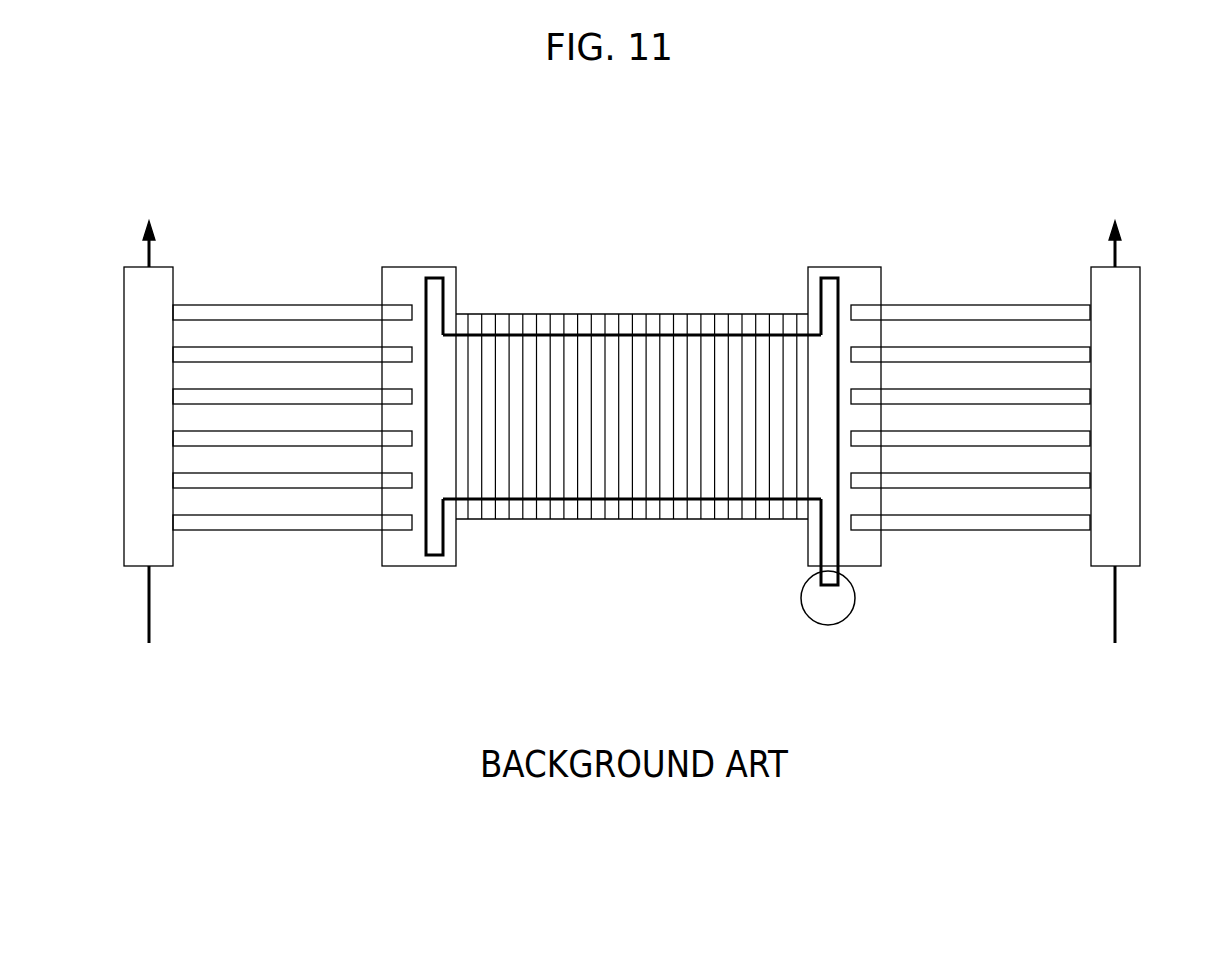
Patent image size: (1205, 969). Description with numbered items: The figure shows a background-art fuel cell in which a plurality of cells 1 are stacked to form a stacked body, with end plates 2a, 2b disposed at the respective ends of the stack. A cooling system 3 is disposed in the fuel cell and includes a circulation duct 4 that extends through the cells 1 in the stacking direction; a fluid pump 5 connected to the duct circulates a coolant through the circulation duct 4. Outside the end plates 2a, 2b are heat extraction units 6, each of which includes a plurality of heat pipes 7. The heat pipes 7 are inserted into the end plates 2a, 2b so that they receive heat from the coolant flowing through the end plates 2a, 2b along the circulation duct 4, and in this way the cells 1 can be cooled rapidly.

The cells 1 is at (573, 312).
The end plate 2a is at (404, 272).
The end plate 2b is at (856, 272).
The cooling system 3 is at (793, 628).
The circulation duct 4 is at (570, 503).
The fluid pump 5 is at (838, 611).
The heat extraction units 6 is at (117, 577).
The heat pipes 7 is at (272, 355).